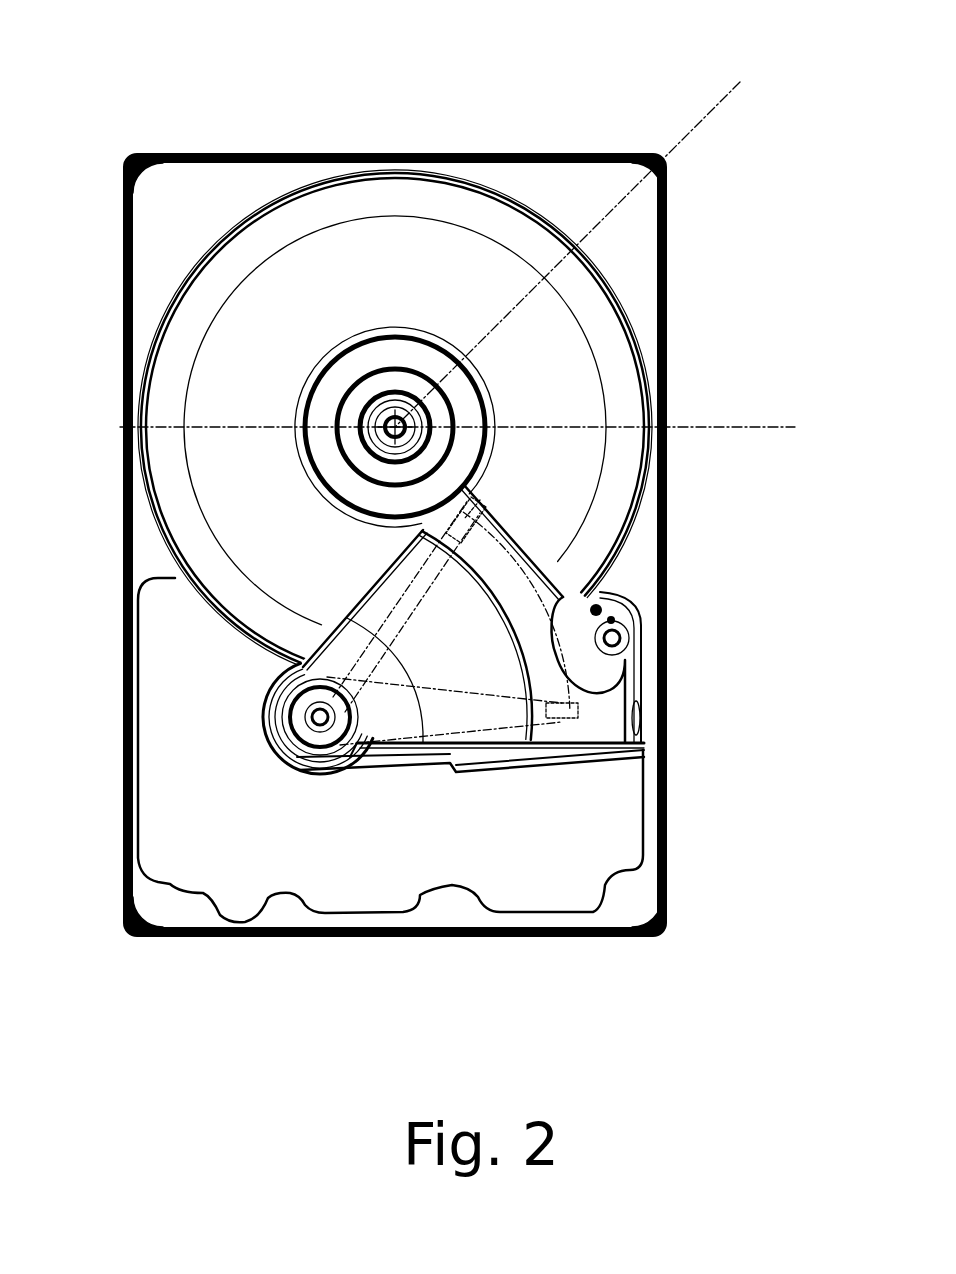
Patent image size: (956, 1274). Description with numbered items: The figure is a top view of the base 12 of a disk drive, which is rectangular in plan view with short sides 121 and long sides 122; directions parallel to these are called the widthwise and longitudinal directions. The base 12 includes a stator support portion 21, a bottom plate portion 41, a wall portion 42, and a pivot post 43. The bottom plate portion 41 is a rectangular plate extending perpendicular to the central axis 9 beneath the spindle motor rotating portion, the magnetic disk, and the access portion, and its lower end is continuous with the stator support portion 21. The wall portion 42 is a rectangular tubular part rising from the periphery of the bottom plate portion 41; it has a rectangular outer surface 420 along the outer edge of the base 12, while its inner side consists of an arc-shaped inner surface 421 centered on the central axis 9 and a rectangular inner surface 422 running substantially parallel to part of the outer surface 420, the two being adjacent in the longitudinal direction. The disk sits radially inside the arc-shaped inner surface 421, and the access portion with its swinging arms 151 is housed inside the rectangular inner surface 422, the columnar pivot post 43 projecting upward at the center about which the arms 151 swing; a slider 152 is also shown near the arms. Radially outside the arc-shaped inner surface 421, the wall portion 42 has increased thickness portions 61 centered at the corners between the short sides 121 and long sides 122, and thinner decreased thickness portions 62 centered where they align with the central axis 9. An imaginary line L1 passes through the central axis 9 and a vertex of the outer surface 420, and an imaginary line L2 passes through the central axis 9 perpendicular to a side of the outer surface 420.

The base 12 is at (298, 112).
The short sides 121 is at (258, 958).
The long sides 122 is at (687, 516).
The bottom plate portion 41 is at (432, 272).
The wall portion 42 is at (642, 578).
The outer surface 420 is at (670, 300).
The arc-shaped inner surface 421 is at (220, 252).
The rectangular inner surface 422 is at (142, 723).
The pivot post 43 is at (311, 727).
The increased thickness portions 61 is at (175, 218).
The decreased thickness portions 62 is at (120, 425).
The central axis 9 is at (370, 455).
The stator support portion 21 is at (381, 393).
The arms 151 is at (468, 717).
The head 152 is at (565, 707).
The imaginary line L1 is at (745, 120).
The imaginary line L2 is at (742, 427).